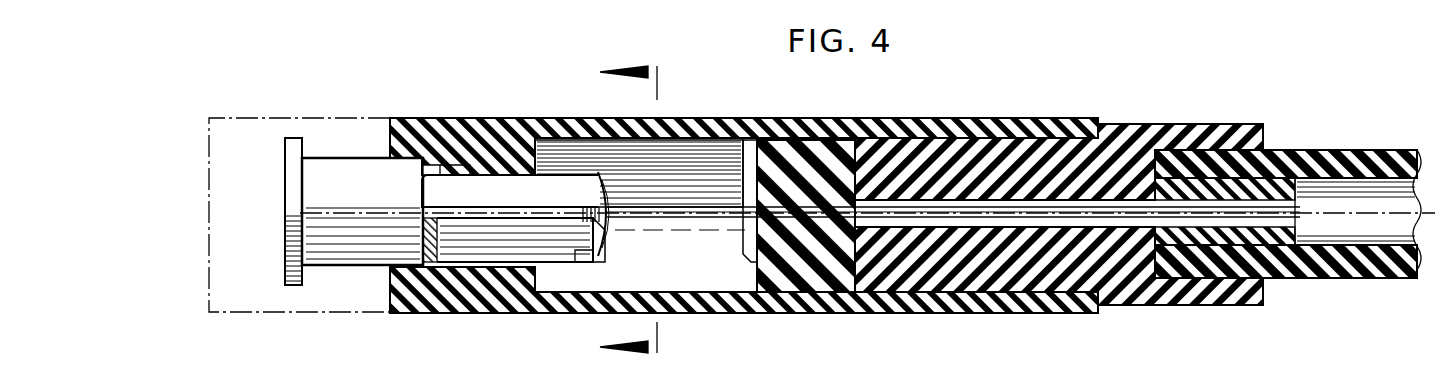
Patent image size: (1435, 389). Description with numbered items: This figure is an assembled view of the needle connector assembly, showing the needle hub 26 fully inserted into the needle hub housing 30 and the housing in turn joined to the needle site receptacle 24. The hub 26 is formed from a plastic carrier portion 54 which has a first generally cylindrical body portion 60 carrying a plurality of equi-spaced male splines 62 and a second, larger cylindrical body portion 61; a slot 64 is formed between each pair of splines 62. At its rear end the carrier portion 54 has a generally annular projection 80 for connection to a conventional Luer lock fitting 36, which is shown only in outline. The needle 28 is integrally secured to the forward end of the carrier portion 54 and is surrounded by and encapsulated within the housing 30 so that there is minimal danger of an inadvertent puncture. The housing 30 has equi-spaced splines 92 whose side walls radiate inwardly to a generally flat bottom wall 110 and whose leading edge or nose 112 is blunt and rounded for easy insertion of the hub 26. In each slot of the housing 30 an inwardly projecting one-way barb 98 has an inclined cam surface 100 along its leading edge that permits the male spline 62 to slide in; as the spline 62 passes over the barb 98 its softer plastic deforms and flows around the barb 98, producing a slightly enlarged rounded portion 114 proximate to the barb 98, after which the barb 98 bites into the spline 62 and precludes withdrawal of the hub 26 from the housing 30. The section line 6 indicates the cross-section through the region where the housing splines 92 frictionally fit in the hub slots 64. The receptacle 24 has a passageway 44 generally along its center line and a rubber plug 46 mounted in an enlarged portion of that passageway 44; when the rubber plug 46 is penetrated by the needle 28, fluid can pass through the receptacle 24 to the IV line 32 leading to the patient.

The section line 6 is at (639, 210).
The needle site receptacle 24 is at (922, 265).
The needle hub 26 is at (603, 252).
The needle 28 is at (697, 218).
The needle hub housing 30 is at (733, 118).
The IV line 32 is at (1370, 160).
The Luer lock fitting 36 is at (233, 130).
The passageway 44 is at (1070, 220).
The rubber plug 46 is at (808, 263).
The carrier portion 54 is at (342, 170).
The first cylindrical body portion 60 is at (550, 188).
The second cylindrical body portion 61 is at (357, 255).
The male spline 62 is at (510, 172).
The slot 64 is at (475, 268).
The annular projection 80 is at (293, 287).
The spline 92 is at (437, 282).
The one-way barb 98 is at (530, 278).
The cam surface 100 is at (493, 273).
The bottom wall 110 is at (465, 167).
The nose 112 is at (440, 168).
The rounded portion 114 is at (585, 265).